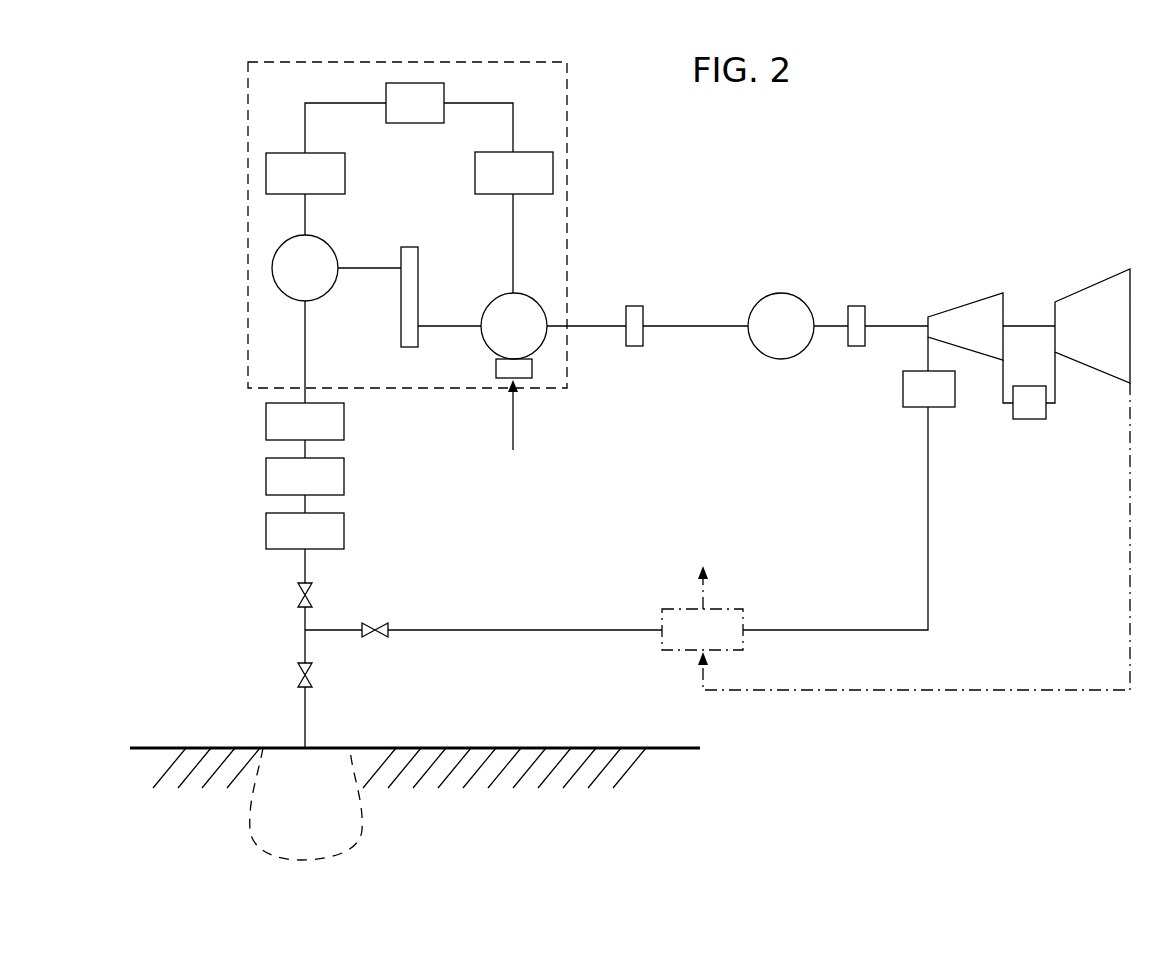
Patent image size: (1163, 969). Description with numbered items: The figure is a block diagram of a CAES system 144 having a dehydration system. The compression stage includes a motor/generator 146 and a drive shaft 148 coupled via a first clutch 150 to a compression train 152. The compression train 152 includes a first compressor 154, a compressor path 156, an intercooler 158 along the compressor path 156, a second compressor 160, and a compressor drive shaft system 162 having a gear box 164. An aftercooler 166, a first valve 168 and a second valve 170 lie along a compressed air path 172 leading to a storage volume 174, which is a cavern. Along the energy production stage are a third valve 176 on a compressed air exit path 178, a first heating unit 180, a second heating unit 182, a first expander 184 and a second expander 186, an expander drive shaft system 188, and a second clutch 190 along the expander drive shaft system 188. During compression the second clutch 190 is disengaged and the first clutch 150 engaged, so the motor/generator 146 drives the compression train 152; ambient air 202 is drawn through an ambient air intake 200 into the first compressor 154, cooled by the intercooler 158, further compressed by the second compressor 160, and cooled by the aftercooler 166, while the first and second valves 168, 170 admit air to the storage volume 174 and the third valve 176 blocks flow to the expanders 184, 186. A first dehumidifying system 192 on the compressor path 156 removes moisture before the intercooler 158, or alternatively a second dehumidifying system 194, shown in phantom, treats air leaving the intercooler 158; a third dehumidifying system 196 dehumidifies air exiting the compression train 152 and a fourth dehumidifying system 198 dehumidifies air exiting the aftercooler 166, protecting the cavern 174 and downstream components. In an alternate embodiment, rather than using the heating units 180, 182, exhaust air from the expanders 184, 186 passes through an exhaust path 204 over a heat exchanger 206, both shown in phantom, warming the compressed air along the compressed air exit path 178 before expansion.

The CAES system 144 is at (998, 156).
The motor/generator 146 is at (801, 337).
The drive shaft 148 is at (600, 322).
The first clutch 150 is at (640, 348).
The compression train 152 is at (248, 112).
The first compressor 154 is at (534, 337).
The compressor path 156 is at (305, 214).
The intercooler 158 is at (435, 114).
The second compressor 160 is at (325, 279).
The compressor drive shaft system 162 is at (442, 288).
The gear box 164 is at (401, 302).
The aftercooler 166 is at (325, 488).
The first valve 168 is at (297, 600).
The second valve 170 is at (297, 675).
The compressed air path 172 is at (303, 450).
The storage volume 174 is at (323, 831).
The third valve 176 is at (378, 622).
The compressed air exit path 178 is at (562, 629).
The first heating unit 180 is at (903, 393).
The second heating unit 182 is at (1027, 420).
The first expander 184 is at (995, 337).
The second expander 186 is at (1113, 337).
The expander drive shaft system 188 is at (892, 325).
The second clutch 190 is at (855, 303).
The first dehumidifying system 192 is at (534, 184).
The second dehumidifying system 194 is at (325, 185).
The third dehumidifying system 196 is at (325, 433).
The fourth dehumidifying system 198 is at (325, 542).
The ambient air intake 200 is at (496, 368).
The ambient air 202 is at (529, 430).
The exhaust path 204 is at (1130, 548).
The heat exchanger 206 is at (723, 641).